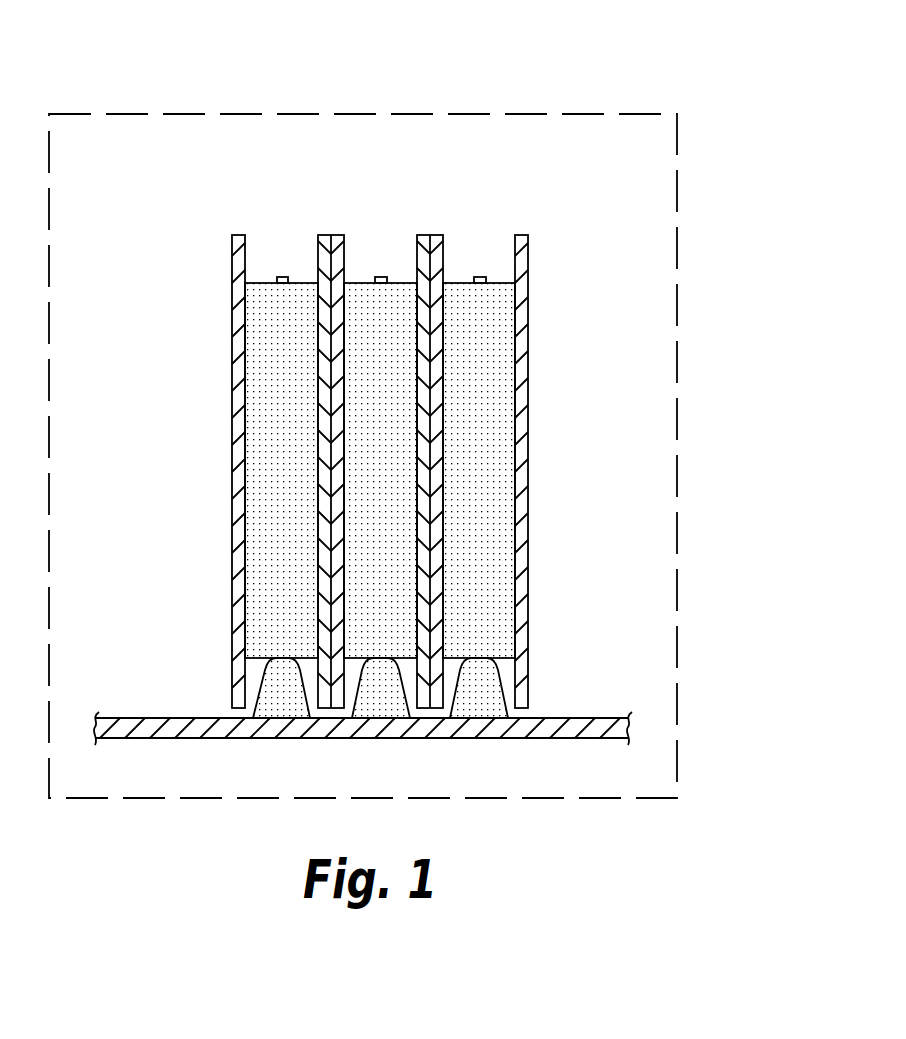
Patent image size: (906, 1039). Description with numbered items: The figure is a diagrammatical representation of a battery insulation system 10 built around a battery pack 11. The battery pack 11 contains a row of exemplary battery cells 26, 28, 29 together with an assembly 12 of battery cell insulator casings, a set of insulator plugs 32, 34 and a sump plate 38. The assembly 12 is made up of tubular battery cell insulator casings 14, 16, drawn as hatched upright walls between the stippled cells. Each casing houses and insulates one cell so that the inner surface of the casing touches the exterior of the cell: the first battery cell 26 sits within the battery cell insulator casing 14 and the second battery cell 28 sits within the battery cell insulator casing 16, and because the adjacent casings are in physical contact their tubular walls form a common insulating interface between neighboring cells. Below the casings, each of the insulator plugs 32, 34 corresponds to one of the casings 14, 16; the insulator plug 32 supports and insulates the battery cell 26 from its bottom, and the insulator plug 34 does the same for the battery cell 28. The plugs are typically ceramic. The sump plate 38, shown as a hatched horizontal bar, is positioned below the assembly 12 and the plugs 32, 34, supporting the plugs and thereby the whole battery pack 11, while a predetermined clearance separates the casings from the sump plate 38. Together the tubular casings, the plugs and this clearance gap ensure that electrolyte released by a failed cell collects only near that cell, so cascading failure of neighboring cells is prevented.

The battery insulation system 10 is at (672, 102).
The battery pack 11 is at (702, 201).
The assembly of battery cell insulator casings 12 is at (632, 311).
The battery cell insulator casing 14 is at (237, 235).
The battery cell insulator casing 16 is at (421, 235).
The first battery cell 26 is at (288, 277).
The second battery cell 28 is at (389, 277).
The battery cell 29 is at (485, 277).
The insulator plug 32 is at (262, 683).
The insulator plug 34 is at (350, 712).
The sump plate 38 is at (575, 718).